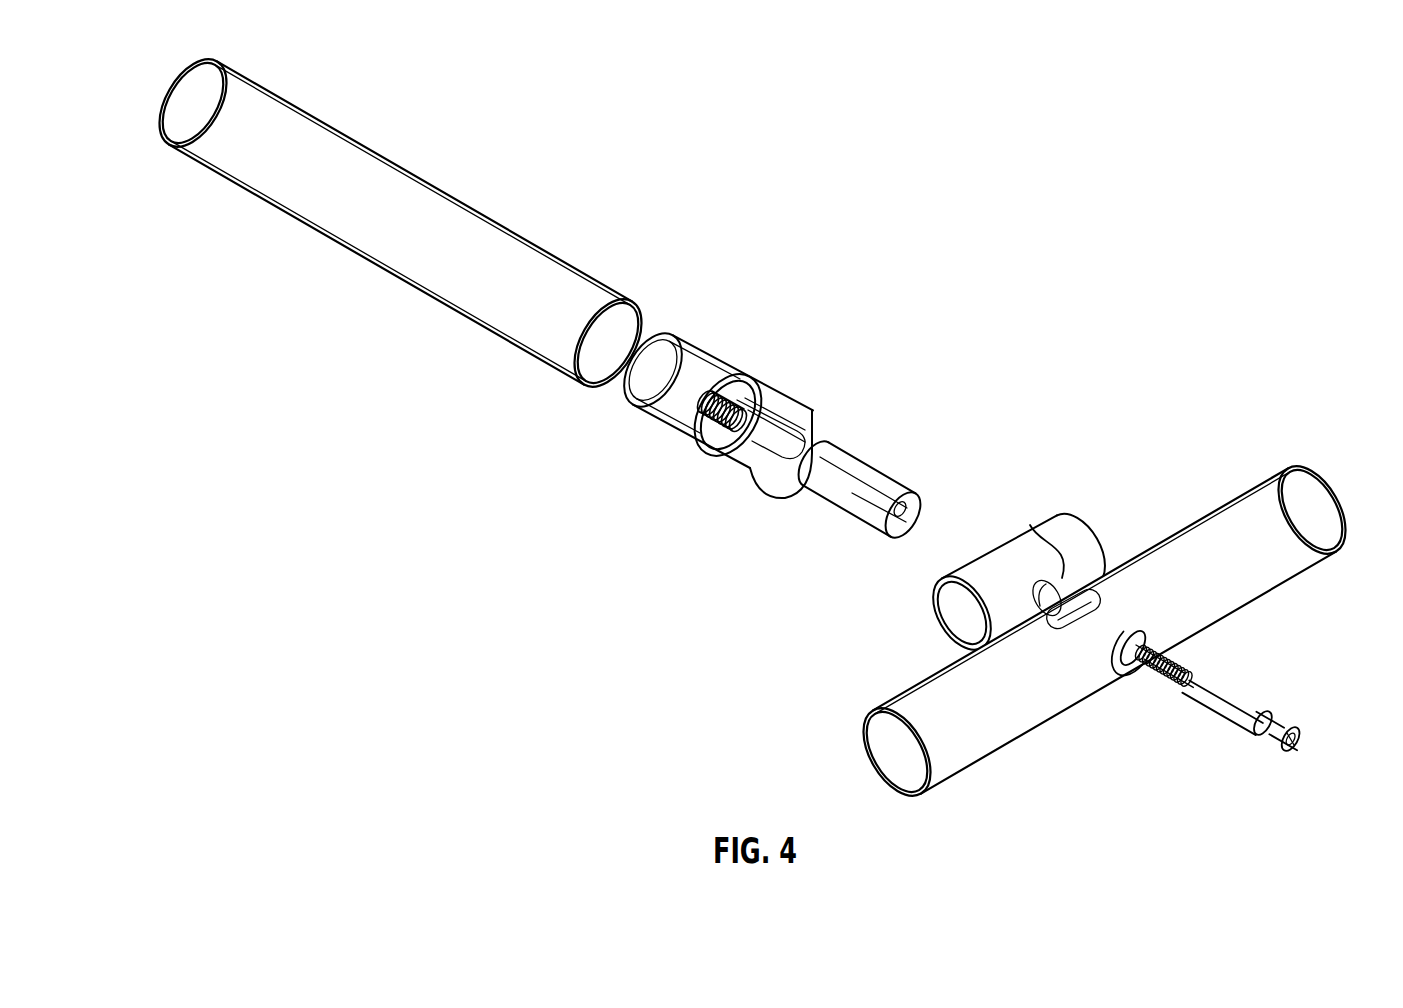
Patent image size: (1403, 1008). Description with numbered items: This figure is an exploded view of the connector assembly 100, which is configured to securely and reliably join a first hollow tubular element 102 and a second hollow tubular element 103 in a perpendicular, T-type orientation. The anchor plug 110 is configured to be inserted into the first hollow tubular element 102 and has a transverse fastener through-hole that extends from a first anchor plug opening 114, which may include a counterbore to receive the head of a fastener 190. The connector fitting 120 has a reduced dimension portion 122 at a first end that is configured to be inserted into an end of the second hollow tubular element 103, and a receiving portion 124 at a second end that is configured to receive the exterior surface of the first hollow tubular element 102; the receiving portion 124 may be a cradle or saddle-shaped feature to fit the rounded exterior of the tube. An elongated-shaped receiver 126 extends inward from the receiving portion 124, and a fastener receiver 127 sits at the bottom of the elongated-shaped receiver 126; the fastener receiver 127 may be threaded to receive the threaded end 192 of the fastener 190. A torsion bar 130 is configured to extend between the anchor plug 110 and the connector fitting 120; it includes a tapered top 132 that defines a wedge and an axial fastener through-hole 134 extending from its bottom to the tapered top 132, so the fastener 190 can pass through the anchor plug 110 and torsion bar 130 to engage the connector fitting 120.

The connector assembly 100 is at (1159, 248).
The first hollow tubular element 102 is at (965, 745).
The second hollow tubular element 103 is at (342, 225).
The anchor plug 110 is at (1018, 559).
The first anchor plug opening 114 is at (1031, 522).
The connector fitting 120 is at (731, 415).
The reduced dimension portion 122 is at (673, 403).
The receiving portion 124 is at (777, 483).
The elongated-shaped receiver 126 is at (813, 413).
The fastener receiver 127 is at (713, 458).
The torsion bar 130 is at (877, 479).
The tapered top 132 is at (910, 482).
The axial fastener through-hole 134 is at (895, 520).
The fastener 190 is at (1207, 700).
The threaded end 192 is at (1180, 663).